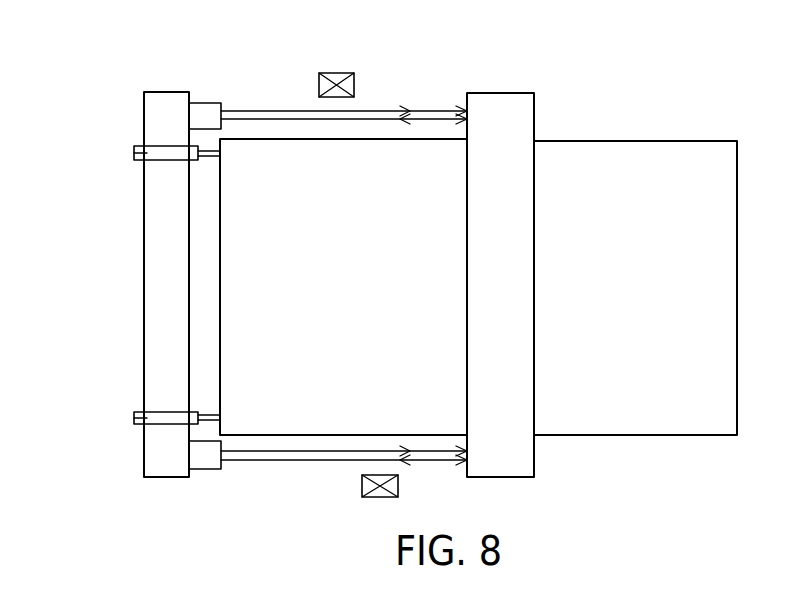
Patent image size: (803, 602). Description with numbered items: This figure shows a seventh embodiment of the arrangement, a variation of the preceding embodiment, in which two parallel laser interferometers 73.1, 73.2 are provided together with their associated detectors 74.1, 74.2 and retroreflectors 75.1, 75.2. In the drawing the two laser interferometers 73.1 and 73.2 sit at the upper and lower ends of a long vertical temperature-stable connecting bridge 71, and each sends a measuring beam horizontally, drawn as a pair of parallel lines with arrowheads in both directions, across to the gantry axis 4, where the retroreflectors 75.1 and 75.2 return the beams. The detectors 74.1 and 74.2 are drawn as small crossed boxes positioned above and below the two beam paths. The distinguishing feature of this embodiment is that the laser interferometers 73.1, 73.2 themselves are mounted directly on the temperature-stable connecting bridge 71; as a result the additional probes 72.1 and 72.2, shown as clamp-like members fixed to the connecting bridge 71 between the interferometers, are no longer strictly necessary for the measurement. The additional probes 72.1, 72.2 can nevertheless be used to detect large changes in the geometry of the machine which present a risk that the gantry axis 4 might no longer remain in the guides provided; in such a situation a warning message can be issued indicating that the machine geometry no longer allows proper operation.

The temperature-stable connecting bridge 71 is at (158, 265).
The additional probe 72.1 is at (141, 153).
The additional probe 72.2 is at (141, 418).
The laser interferometer 73.1 is at (207, 110).
The laser interferometer 73.2 is at (200, 458).
The detector 74.1 is at (351, 85).
The detector 74.2 is at (378, 490).
The retroreflector 75.1 is at (462, 117).
The retroreflector 75.2 is at (462, 454).
The gantry axis 4 is at (512, 281).